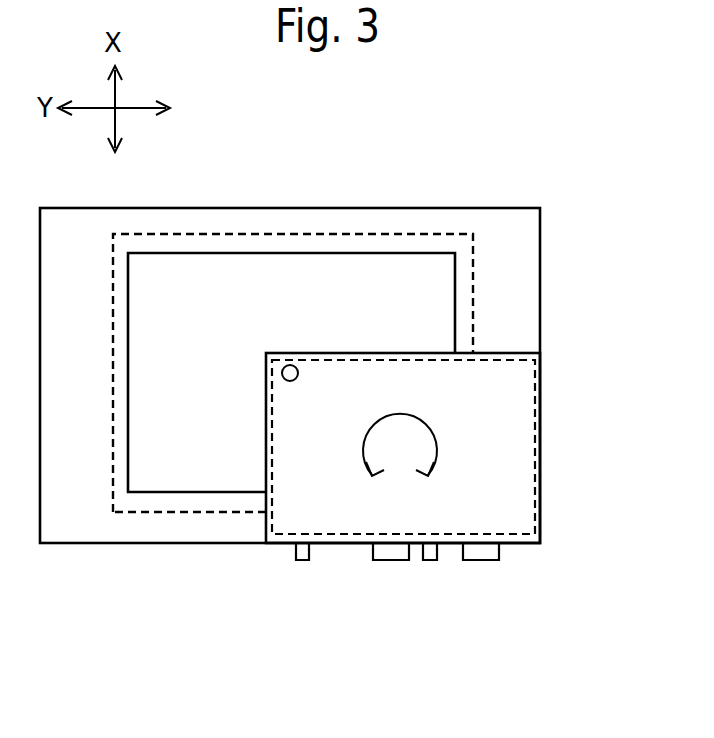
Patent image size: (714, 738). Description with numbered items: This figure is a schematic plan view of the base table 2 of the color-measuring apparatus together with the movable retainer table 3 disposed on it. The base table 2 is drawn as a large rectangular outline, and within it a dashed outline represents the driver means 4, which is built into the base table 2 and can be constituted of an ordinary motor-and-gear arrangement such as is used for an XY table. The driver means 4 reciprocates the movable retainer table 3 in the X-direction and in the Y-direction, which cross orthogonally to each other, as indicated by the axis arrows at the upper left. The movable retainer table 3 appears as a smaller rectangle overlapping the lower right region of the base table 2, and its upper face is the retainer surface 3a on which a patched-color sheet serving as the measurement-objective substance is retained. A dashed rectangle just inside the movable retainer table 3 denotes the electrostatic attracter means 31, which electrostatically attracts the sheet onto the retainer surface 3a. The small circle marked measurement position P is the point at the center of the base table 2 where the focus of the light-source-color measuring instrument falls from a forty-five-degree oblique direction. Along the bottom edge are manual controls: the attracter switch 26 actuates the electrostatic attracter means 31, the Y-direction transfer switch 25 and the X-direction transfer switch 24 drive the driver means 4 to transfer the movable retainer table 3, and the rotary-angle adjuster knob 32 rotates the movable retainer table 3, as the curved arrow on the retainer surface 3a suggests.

The base table 2 is at (540, 242).
The driver means 4 is at (473, 309).
The movable retainer table 3 is at (503, 353).
The electrostatic attracter means 31 is at (540, 412).
The retainer surface 3a is at (510, 478).
The measurement position P is at (291, 365).
The attracter switch 26 is at (302, 560).
The Y-direction transfer switch 25 is at (390, 552).
The rotary-angle adjuster knob 32 is at (432, 560).
The X-direction transfer switch 24 is at (485, 557).